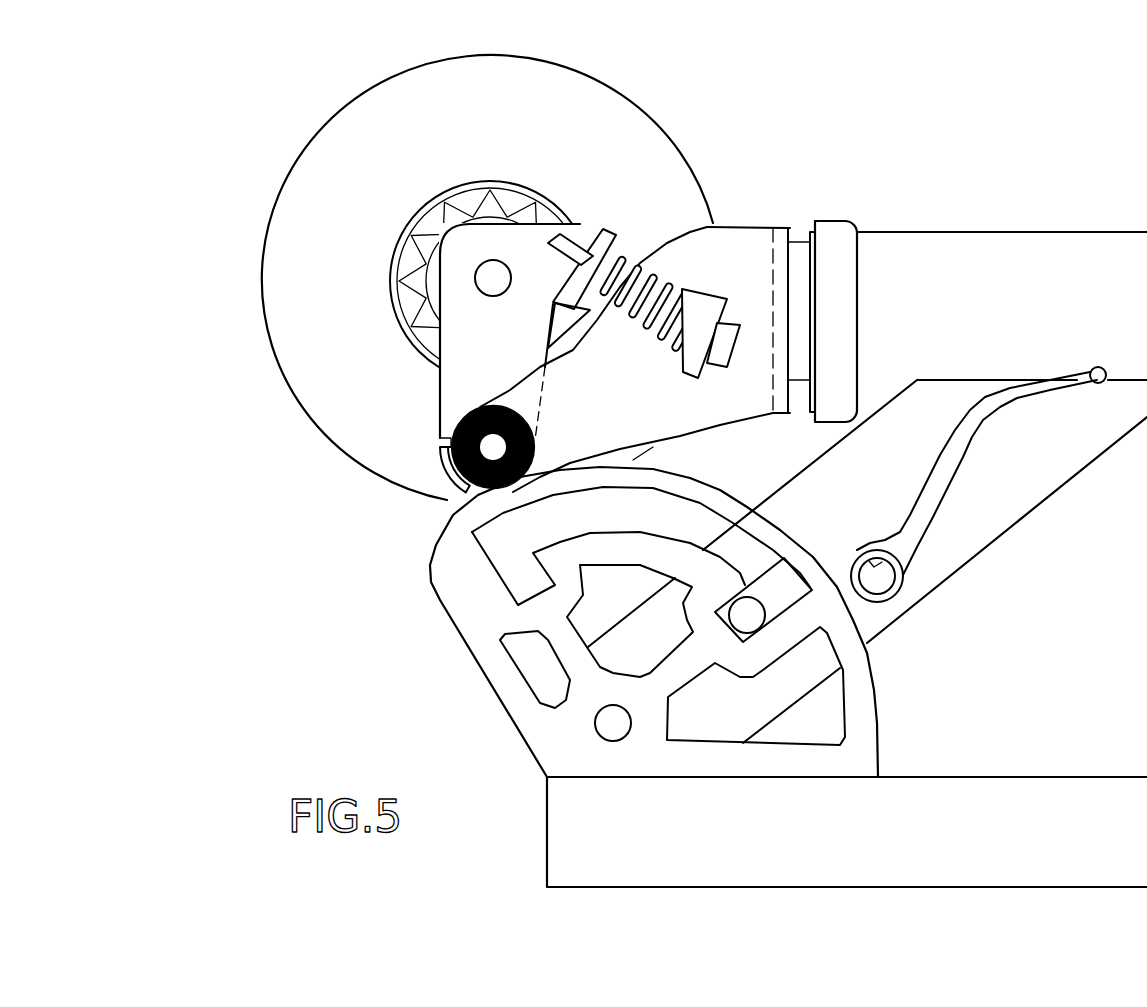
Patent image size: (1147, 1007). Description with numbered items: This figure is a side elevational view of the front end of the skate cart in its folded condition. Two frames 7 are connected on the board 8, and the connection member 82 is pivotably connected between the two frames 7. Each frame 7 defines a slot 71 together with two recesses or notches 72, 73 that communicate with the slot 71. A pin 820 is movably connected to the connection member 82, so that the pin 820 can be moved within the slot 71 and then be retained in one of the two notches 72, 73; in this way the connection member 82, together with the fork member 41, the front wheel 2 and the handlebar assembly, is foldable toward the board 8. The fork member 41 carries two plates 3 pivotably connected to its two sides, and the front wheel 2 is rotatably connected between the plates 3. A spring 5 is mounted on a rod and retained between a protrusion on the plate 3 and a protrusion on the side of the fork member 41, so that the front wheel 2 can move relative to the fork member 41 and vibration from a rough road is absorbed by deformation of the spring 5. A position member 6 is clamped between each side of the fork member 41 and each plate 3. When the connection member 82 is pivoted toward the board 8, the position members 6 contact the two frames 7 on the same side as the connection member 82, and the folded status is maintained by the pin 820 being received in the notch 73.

The front wheel 2 is at (318, 192).
The plate 3 is at (460, 372).
The spring 5 is at (620, 277).
The fork member 41 is at (733, 257).
The position member 6 is at (446, 466).
The frame 7 is at (616, 632).
The slot 71 is at (707, 510).
The notch 72 is at (530, 590).
The notch 73 is at (745, 637).
The board 8 is at (1048, 790).
The connection member 82 is at (929, 513).
The pin 820 is at (753, 615).